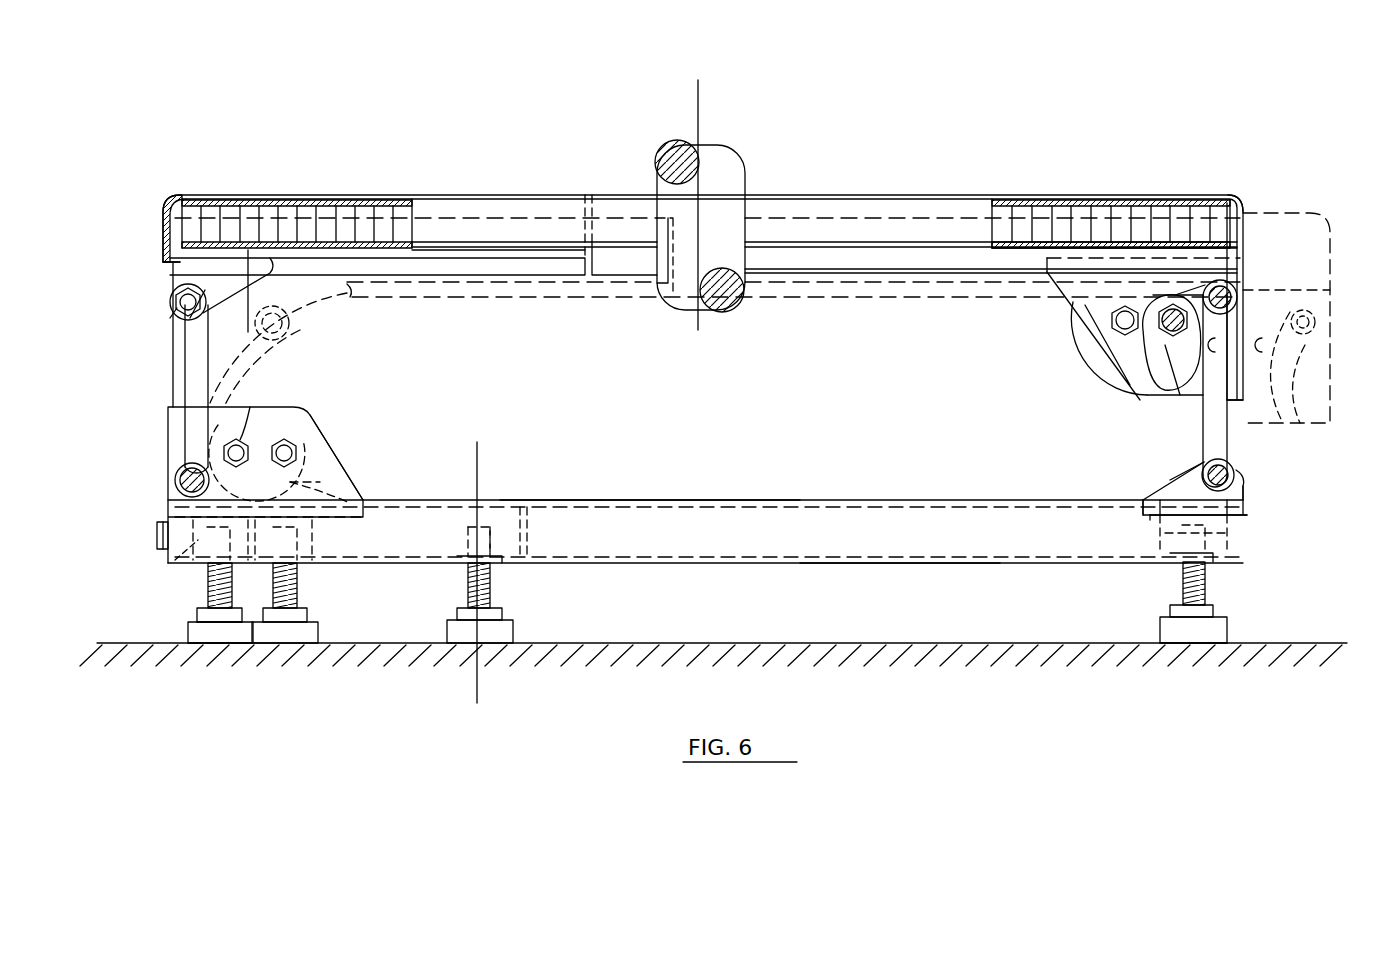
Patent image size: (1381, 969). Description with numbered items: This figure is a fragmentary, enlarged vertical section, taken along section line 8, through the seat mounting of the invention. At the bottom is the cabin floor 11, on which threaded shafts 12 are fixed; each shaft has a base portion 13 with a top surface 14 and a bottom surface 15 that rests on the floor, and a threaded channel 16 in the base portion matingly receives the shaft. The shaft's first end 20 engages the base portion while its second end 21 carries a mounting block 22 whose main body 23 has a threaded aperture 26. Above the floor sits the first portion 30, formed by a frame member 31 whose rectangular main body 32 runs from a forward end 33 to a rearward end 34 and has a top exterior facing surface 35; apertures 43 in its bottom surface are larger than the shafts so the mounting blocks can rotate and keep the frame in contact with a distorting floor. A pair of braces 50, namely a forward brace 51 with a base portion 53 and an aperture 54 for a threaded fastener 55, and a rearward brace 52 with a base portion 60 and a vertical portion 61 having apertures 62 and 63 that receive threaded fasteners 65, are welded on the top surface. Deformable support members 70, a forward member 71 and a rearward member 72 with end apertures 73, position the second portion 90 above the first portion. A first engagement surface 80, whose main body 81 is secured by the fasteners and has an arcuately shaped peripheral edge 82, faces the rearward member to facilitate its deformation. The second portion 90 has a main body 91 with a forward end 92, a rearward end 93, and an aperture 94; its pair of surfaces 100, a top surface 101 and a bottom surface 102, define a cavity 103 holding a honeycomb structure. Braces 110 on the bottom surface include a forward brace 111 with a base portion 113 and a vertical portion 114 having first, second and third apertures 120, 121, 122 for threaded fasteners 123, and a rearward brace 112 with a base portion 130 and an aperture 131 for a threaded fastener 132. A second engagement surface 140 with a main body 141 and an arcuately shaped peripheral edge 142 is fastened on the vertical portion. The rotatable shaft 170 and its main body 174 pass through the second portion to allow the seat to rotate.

The section line 8 is at (477, 690).
The cabin floor 11 is at (905, 641).
The threaded shaft 12 is at (208, 585).
The base portion 13 is at (188, 630).
The top surface 14 is at (195, 622).
The bottom surface 15 is at (185, 650).
The threaded channel 16 is at (307, 612).
The first end 20 is at (318, 630).
The second end 21 is at (330, 568).
The mounting block 22 is at (538, 485).
The main body 23 is at (488, 482).
The threaded aperture 26 is at (175, 558).
The first portion 30 is at (900, 490).
The frame member 31 is at (688, 500).
The main body 32 is at (748, 520).
The first end 33 is at (1247, 515).
The second end 34 is at (170, 515).
The top exterior facing surface 35 is at (620, 500).
The aperture 43 is at (500, 570).
The braces 50 is at (330, 405).
The forward brace 51 is at (1142, 500).
The rearward brace 52 is at (370, 460).
The base portion 53 is at (1145, 510).
The aperture 54 is at (1243, 482).
The threaded fastener 55 is at (1180, 486).
The base portion 60 is at (365, 490).
The vertical portion 61 is at (320, 450).
The aperture 62 is at (245, 405).
The aperture 63 is at (290, 420).
The threaded fastener 65 is at (237, 440).
The deformable support members 70 is at (160, 348).
The forward member 71 is at (1230, 375).
The rearward member 72 is at (185, 330).
The aperture 73 is at (173, 305).
The first engagement surface 80 is at (150, 535).
The main body 81 is at (330, 470).
The arcuately shaped peripheral edge 82 is at (195, 380).
The second portion 90 is at (228, 192).
The main body 91 is at (480, 195).
The forward end 92 is at (1235, 195).
The rearward end 93 is at (165, 200).
The aperture 94 is at (905, 195).
The pair of surfaces 100 is at (388, 230).
The top surface 101 is at (1040, 200).
The bottom surface 102 is at (1095, 240).
The cavity 103 is at (990, 222).
The braces 110 is at (158, 272).
The forward brace 111 is at (1095, 335).
The rearward brace 112 is at (175, 265).
The base portion 113 is at (1047, 272).
The vertical portion 114 is at (1115, 335).
The first aperture 120 is at (1290, 282).
The second aperture 121 is at (1155, 375).
The third aperture 122 is at (1125, 380).
The threaded fastener 123 is at (1220, 195).
The base portion 130 is at (250, 245).
The aperture 131 is at (207, 287).
The threaded fastener 132 is at (192, 285).
The second engagement surface 140 is at (1290, 388).
The main body 141 is at (1120, 195).
The arcuately shaped peripheral edge 142 is at (1110, 395).
The rotatable shaft 170 is at (733, 213).
The main body 174 is at (708, 208).